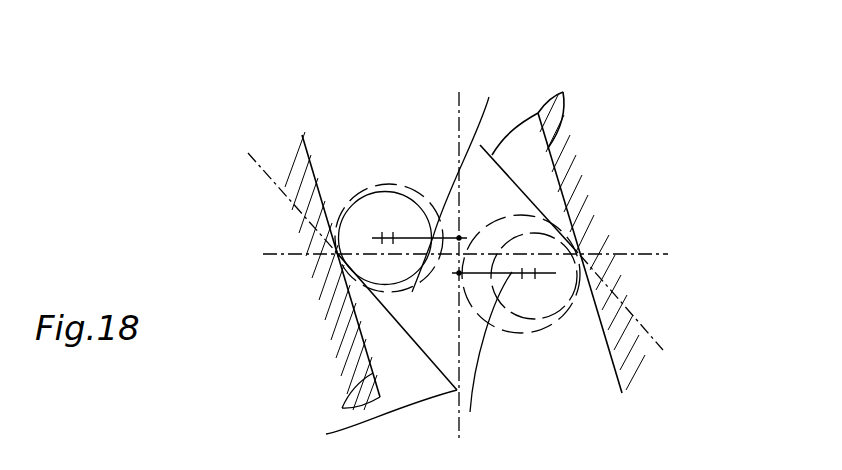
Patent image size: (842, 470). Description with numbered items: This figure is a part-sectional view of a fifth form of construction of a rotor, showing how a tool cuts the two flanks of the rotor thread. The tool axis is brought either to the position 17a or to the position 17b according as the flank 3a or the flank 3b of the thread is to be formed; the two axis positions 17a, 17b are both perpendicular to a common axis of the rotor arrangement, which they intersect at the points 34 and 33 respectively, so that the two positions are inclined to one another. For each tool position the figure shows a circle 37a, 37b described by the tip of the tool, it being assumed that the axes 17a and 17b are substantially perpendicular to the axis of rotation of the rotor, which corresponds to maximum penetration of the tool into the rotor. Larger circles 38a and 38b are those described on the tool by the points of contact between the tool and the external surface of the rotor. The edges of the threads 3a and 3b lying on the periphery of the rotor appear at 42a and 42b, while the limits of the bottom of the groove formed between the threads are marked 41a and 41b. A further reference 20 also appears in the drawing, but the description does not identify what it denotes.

The thread flank 3a is at (343, 276).
The thread flank 3b is at (562, 254).
The tool axis position 17a is at (461, 184).
The tool axis position 17b is at (488, 353).
The center axis line 20 is at (280, 255).
The intersection point 33 is at (459, 273).
The intersection point 34 is at (459, 238).
The tool tip circle 37a is at (408, 197).
The tool tip circle 37b is at (542, 228).
The contact circle 38a is at (372, 185).
The contact circle 38b is at (523, 334).
The groove bottom limit 41a is at (255, 162).
The groove bottom limit 41b is at (643, 328).
The thread edge 42a is at (302, 135).
The thread edge 42b is at (615, 380).